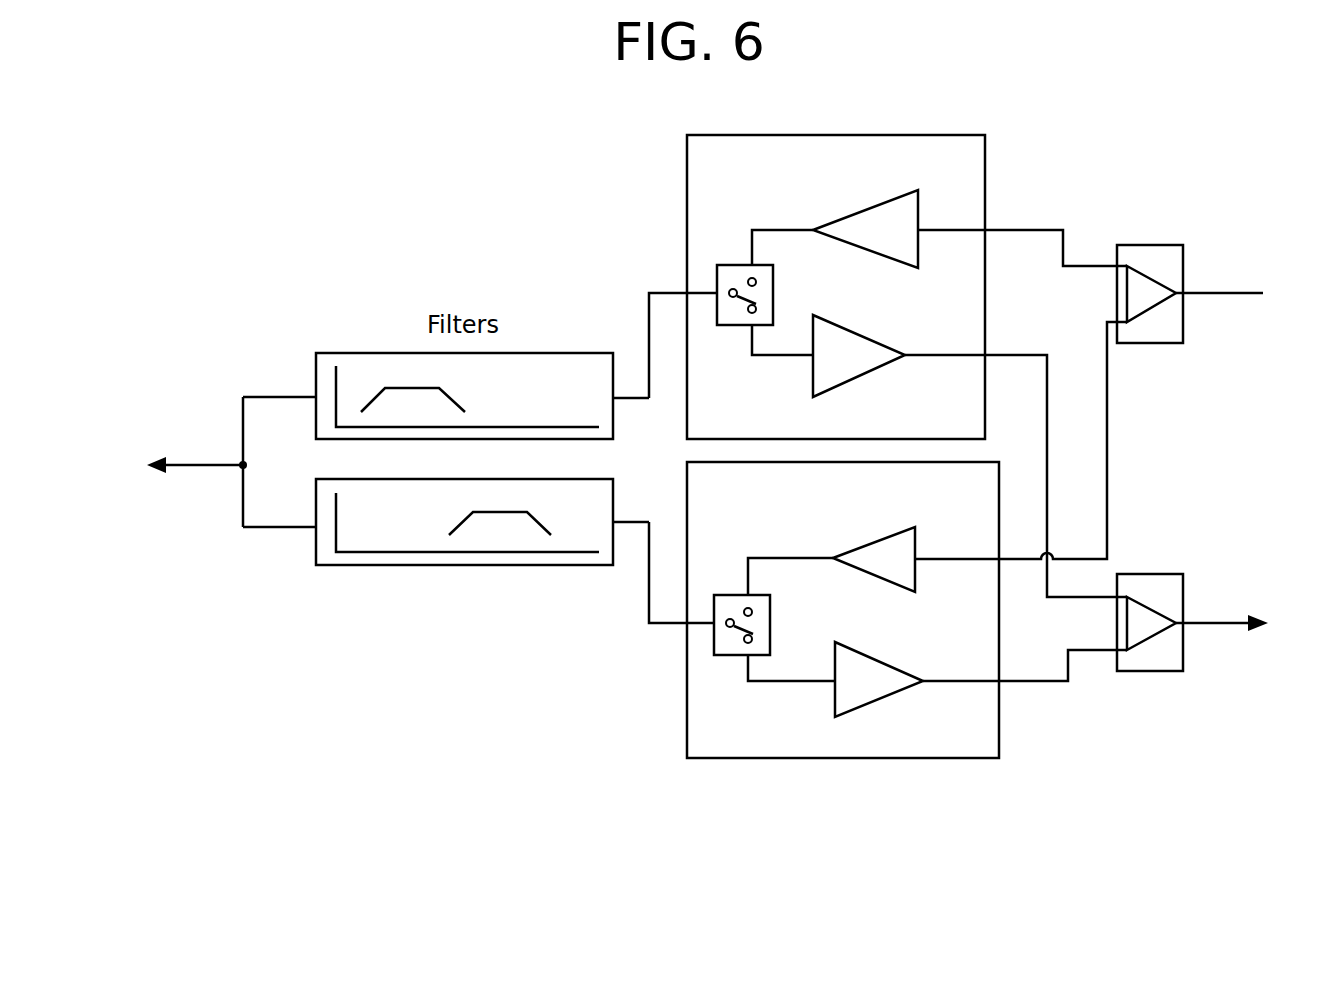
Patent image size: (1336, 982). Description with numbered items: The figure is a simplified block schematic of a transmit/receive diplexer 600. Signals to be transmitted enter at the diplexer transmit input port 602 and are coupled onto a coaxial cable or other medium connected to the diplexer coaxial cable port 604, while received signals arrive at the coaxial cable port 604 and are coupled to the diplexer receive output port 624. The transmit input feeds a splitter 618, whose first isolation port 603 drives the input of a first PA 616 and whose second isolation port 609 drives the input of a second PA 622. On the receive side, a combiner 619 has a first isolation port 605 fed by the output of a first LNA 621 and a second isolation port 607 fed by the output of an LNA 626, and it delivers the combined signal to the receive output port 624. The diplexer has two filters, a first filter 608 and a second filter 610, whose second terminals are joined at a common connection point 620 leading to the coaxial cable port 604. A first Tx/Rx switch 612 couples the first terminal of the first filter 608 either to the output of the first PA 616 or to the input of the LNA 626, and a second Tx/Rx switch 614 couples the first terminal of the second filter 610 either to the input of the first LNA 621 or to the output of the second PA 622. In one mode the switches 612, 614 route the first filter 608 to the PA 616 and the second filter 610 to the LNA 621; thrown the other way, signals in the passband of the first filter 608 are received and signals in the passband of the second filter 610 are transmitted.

The transmit/receive diplexer 600 is at (218, 202).
The diplexer transmit input port 602 is at (1227, 294).
The first isolation port of the splitter 603 is at (1117, 246).
The diplexer coaxial cable port 604 is at (188, 466).
The first isolation port of the combiner 605 is at (1113, 652).
The second isolation port of the combiner 607 is at (1113, 599).
The first filter 608 is at (340, 353).
The second isolation port of the splitter 609 is at (1117, 322).
The second filter 610 is at (347, 567).
The first Tx/Rx switch 612 is at (736, 265).
The second Tx/Rx switch 614 is at (734, 656).
The first PA 616 is at (919, 191).
The splitter 618 is at (1159, 344).
The combiner 619 is at (1167, 672).
The common connection point 620 is at (246, 466).
The first LNA 621 is at (880, 703).
The second PA 622 is at (903, 527).
The diplexer receive output port 624 is at (1227, 624).
The LNA 626 is at (887, 367).